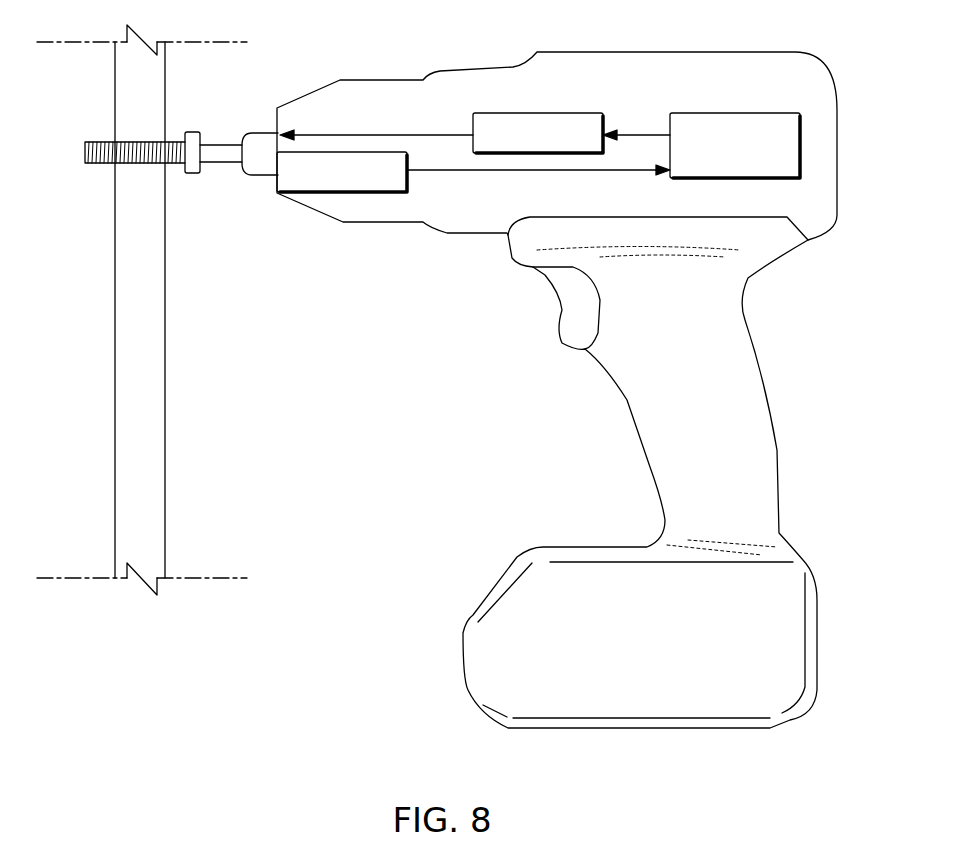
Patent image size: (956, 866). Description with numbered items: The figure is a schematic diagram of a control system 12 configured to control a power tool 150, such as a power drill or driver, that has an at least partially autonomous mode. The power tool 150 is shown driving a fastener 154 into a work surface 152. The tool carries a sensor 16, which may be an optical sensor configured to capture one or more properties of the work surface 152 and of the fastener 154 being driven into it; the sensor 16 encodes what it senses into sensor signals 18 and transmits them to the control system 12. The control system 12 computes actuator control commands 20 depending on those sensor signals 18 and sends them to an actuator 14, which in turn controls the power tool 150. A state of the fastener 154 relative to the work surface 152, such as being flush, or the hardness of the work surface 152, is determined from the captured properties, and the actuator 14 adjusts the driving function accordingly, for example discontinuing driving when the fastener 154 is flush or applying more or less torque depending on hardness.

The control system 12 is at (735, 113).
The actuator 14 is at (538, 113).
The sensor 16 is at (340, 193).
The sensor signals 18 is at (492, 172).
The actuator control commands 20 is at (648, 132).
The power tool 150 is at (632, 418).
The work surface 152 is at (165, 358).
The fastener 154 is at (200, 175).